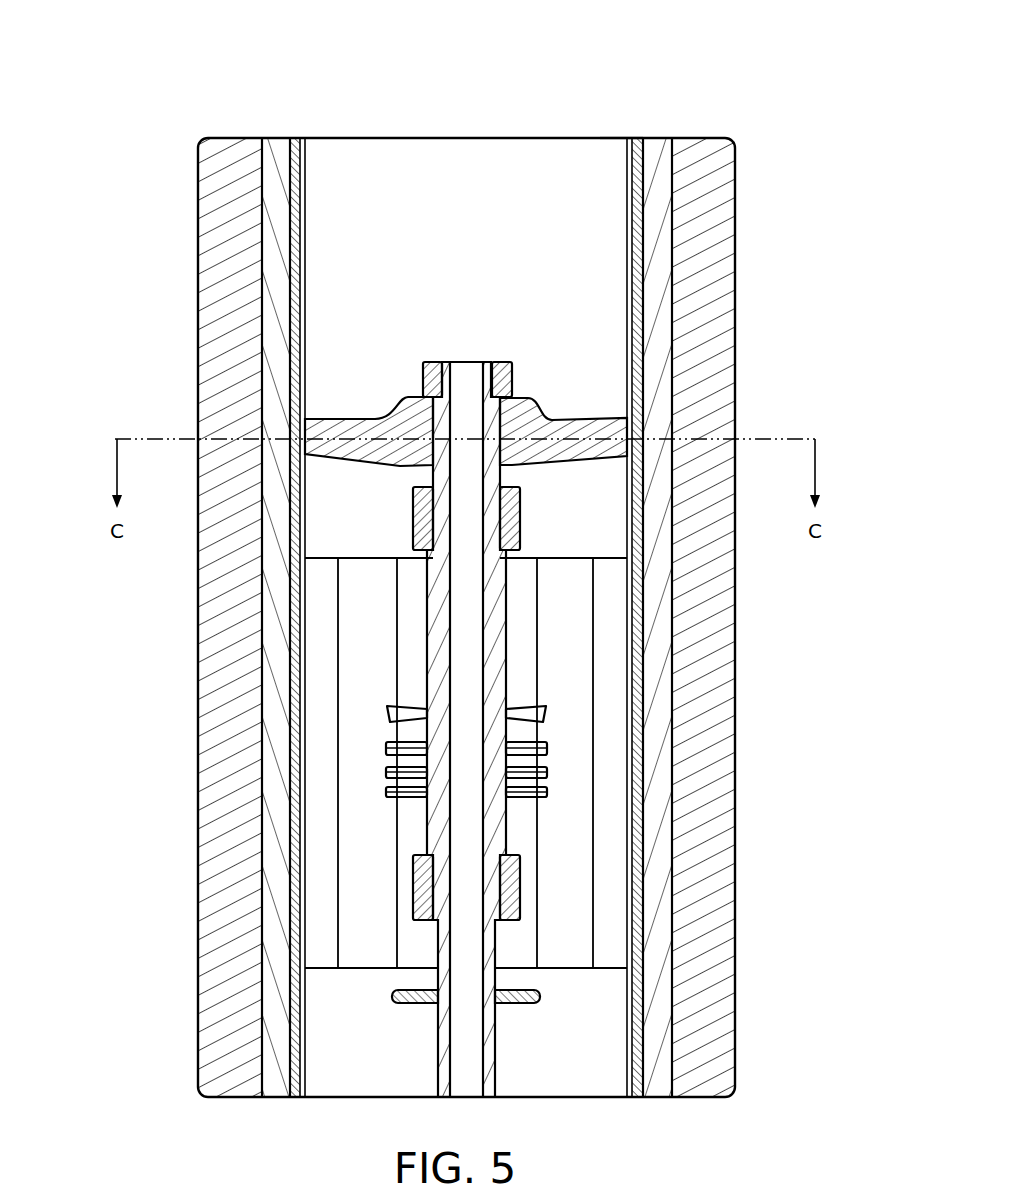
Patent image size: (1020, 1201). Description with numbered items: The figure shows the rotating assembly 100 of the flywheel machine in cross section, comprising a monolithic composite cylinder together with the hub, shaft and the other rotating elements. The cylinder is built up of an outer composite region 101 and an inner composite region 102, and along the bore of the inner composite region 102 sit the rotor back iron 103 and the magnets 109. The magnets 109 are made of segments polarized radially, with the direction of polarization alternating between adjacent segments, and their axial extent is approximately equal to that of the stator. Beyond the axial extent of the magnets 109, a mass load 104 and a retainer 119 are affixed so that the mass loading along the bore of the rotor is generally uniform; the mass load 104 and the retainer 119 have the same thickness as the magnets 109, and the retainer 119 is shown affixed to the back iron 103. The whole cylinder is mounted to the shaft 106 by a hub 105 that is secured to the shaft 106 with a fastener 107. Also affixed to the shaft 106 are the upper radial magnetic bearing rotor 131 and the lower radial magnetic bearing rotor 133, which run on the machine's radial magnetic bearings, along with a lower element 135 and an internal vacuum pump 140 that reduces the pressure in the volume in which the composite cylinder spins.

The sensor assembly 100 is at (628, 183).
The outer composite region 101 is at (728, 210).
The inner composite region 102 is at (650, 272).
The rotor back iron 103 is at (632, 153).
The mass load 104 is at (630, 342).
The hub 105 is at (345, 430).
The shaft 106 is at (505, 470).
The fastener 107 is at (514, 372).
The magnets 109 is at (403, 652).
The retainer 119 is at (632, 1018).
The upper radial magnetic bearing rotor 131 is at (413, 500).
The lower radial magnetic bearing rotor 133 is at (415, 880).
The washer 135 is at (390, 995).
The internal vacuum pump 140 is at (533, 707).